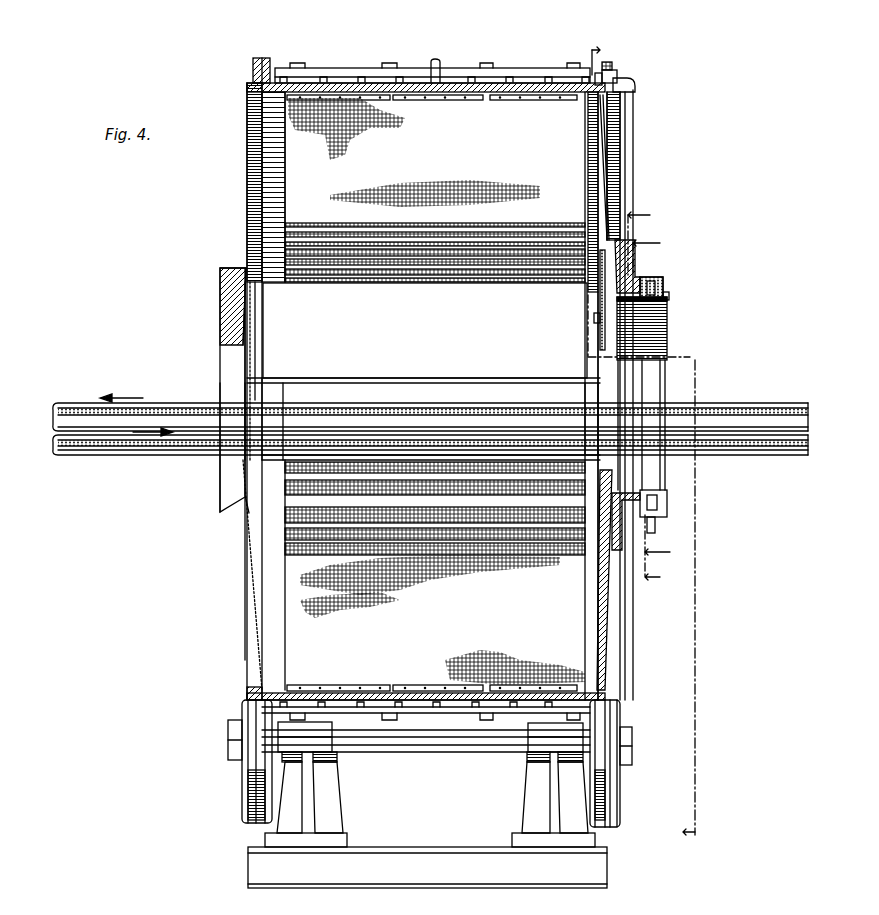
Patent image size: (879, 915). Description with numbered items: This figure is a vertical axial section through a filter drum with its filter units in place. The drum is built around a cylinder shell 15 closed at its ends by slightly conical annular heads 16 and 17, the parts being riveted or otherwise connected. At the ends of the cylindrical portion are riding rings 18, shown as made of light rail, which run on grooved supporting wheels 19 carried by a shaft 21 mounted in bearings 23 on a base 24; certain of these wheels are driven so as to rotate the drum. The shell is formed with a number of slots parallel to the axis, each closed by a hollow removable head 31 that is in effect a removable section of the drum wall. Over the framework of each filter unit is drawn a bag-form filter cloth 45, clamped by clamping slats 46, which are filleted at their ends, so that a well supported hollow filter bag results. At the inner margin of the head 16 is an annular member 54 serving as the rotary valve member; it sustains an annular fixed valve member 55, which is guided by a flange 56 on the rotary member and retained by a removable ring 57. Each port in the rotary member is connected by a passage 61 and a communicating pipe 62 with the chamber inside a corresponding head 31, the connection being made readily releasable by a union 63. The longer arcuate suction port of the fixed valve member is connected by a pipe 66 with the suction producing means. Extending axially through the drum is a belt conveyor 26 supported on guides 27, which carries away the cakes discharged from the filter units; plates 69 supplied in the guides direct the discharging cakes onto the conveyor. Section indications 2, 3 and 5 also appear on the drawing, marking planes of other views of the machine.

The section line 2- 2 is at (648, 397).
The section line 3- 3 is at (658, 398).
The section line 5- 5 is at (641, 445).
The cylinder shell 15 is at (436, 92).
The annular head 16 is at (610, 175).
The annular head 17 is at (258, 184).
The riding ring 18 is at (258, 60).
The grooved supporting wheel 19 is at (252, 790).
The shaft 21 is at (480, 740).
The bearing 23 is at (320, 742).
The base 24 is at (415, 850).
The belt conveyor 26 is at (336, 440).
The guide 27 is at (464, 440).
The removable head 31 is at (527, 75).
The filter cloth 45 is at (431, 391).
The clamping slat 46 is at (497, 100).
The annular member 54 is at (640, 250).
The fixed valve member 55 is at (663, 283).
The flange 56 is at (667, 322).
The removable ring 57 is at (669, 297).
The passage 61 is at (652, 280).
The pipe 62 is at (633, 130).
The union 63 is at (597, 75).
The pipe 66 is at (658, 526).
The plate 69 is at (468, 333).